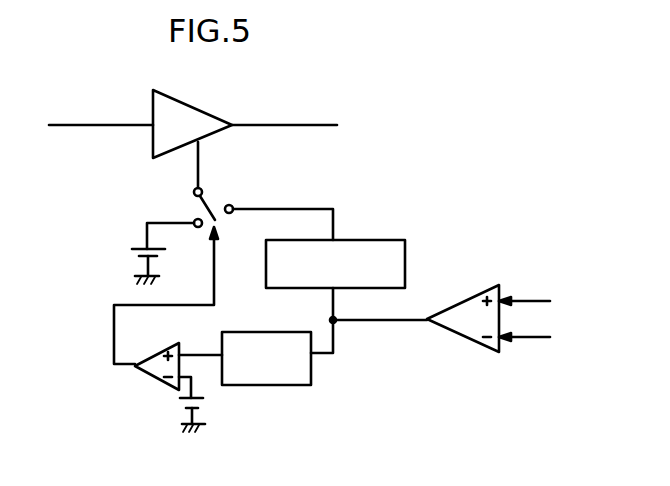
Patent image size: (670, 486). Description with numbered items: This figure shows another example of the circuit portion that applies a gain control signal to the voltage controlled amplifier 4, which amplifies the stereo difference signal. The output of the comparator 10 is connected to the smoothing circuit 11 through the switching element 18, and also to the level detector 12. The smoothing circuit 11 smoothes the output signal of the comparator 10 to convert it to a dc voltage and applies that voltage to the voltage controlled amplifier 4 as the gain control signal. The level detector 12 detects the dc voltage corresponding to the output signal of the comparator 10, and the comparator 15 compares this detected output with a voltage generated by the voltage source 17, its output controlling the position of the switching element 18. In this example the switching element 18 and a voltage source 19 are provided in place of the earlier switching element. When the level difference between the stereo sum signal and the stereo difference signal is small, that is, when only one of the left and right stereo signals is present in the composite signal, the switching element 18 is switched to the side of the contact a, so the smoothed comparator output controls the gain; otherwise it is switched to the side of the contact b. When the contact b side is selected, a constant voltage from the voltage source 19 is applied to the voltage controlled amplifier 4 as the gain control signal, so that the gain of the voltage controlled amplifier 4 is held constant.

The voltage controlled amplifier 4 is at (183, 100).
The switching element 18 is at (215, 187).
The contact a is at (233, 202).
The contact b is at (198, 228).
The voltage source 19 is at (140, 247).
The smoothing circuit 11 is at (373, 240).
The level detector 12 is at (255, 332).
The comparator 10 is at (462, 300).
The comparator 15 is at (143, 377).
The voltage source 17 is at (207, 403).